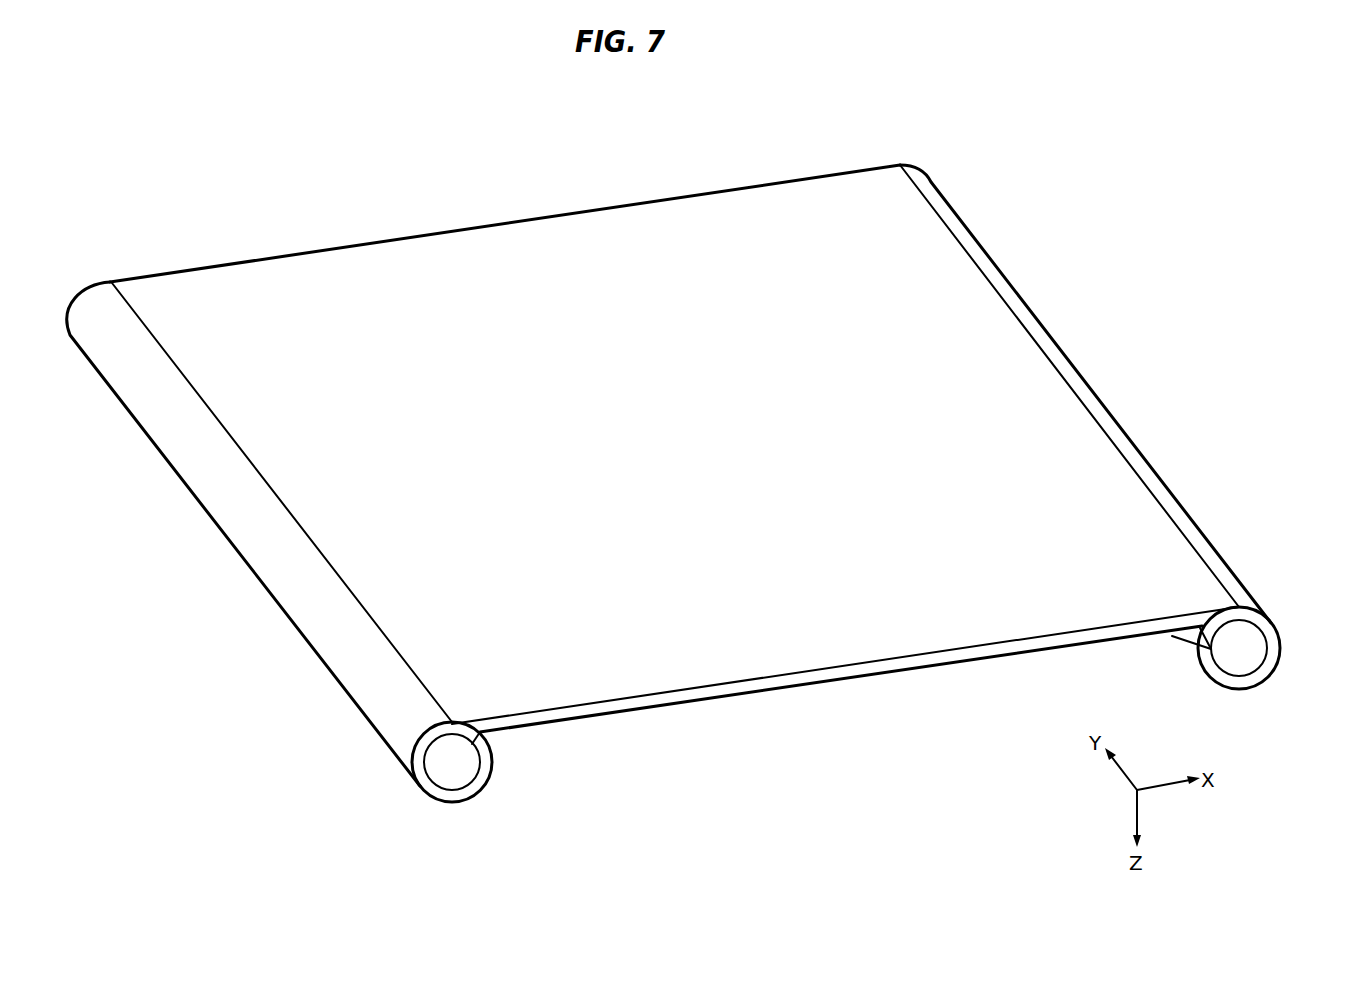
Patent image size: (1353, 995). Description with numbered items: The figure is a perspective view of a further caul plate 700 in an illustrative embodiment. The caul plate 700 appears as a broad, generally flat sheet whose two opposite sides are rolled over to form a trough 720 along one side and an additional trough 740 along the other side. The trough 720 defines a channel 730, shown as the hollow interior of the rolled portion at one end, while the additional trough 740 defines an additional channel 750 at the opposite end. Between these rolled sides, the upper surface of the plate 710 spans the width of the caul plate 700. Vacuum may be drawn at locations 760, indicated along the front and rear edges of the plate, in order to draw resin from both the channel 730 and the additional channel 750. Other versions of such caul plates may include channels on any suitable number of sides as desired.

The caul plate 700 is at (305, 135).
The display panel / display surface 710 is at (428, 258).
The trough 720 is at (307, 605).
The channel 730 is at (456, 764).
The additional trough 740 is at (1166, 492).
The additional channel 750 is at (1245, 650).
The locations 760 is at (541, 210).